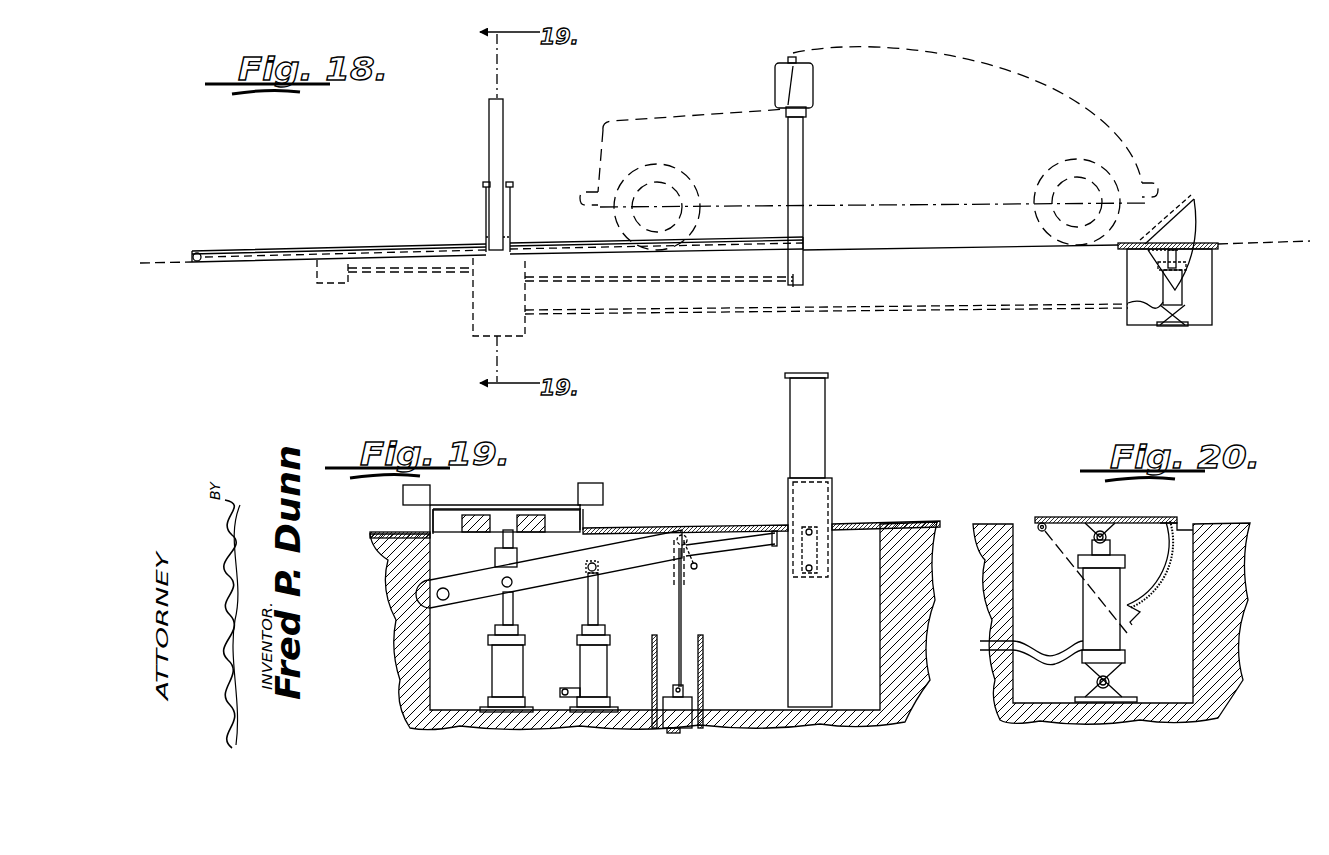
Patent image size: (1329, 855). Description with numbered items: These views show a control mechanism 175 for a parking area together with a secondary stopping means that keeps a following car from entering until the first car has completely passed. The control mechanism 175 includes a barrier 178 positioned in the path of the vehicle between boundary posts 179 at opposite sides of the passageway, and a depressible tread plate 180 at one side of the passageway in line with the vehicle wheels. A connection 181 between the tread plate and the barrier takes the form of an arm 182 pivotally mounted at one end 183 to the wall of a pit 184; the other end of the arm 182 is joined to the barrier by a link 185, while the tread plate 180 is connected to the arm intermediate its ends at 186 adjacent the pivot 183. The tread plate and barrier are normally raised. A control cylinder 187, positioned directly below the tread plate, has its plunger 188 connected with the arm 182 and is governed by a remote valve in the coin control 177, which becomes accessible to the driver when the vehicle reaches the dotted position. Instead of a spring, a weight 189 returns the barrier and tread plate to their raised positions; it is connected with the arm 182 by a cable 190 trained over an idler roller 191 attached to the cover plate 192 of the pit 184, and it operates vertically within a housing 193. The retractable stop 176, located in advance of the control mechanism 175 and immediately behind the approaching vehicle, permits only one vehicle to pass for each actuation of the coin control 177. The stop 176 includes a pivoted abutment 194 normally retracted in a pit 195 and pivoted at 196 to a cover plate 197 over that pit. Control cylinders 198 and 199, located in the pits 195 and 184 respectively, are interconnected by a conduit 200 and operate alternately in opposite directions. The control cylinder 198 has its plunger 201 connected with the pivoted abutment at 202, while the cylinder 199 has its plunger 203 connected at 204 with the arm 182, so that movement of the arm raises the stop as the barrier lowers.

In FIG. 18, the control mechanism 175 is at (472, 207).
In FIG. 19, the control mechanism 175 is at (867, 460).
In FIG. 18, the retractable stop 176 is at (1205, 230).
In FIG. 20, the retractable stop 176 is at (1072, 510).
In FIG. 18, the coin control 177 is at (775, 88).
In FIG. 18, the barrier 178 is at (486, 193).
In FIG. 19, the barrier 178 is at (826, 418).
In FIG. 18, the boundary posts 179 is at (488, 128).
In FIG. 19, the depressible tread plate 180 is at (547, 495).
In FIG. 19, the connection 181 is at (618, 553).
In FIG. 19, the arm 182 is at (717, 550).
In FIG. 19, the pivot 183 is at (437, 595).
In FIG. 19, the pit 184 is at (437, 645).
In FIG. 19, the link 185 is at (820, 549).
In FIG. 19, the tread plate connection 186 is at (503, 579).
In FIG. 19, the control cylinder 187 is at (487, 665).
In FIG. 19, the plunger 188 is at (503, 613).
In FIG. 19, the weight 189 is at (690, 702).
In FIG. 19, the cable 190 is at (682, 607).
In FIG. 19, the idler roller 191 is at (684, 537).
In FIG. 19, the cover plate 192 is at (741, 525).
In FIG. 19, the housing 193 is at (705, 645).
In FIG. 18, the pivoted abutment 194 is at (1188, 205).
In FIG. 20, the pivoted abutment 194 is at (1145, 517).
In FIG. 18, the pit 195 is at (1207, 264).
In FIG. 20, the pit 195 is at (1182, 601).
In FIG. 20, the pivot 196 is at (1046, 540).
In FIG. 20, the cover plate 197 is at (1040, 521).
In FIG. 18, the control cylinder 198 is at (1185, 291).
In FIG. 20, the control cylinder 198 is at (1135, 630).
In FIG. 19, the control cylinder 199 is at (580, 657).
In FIG. 18, the conduit 200 is at (1140, 301).
In FIG. 19, the conduit 200 is at (565, 688).
In FIG. 20, the conduit 200 is at (1052, 650).
In FIG. 20, the plunger 201 is at (1107, 546).
In FIG. 20, the abutment connection 202 is at (1103, 530).
In FIG. 19, the plunger 203 is at (588, 607).
In FIG. 19, the arm connection 204 is at (596, 571).